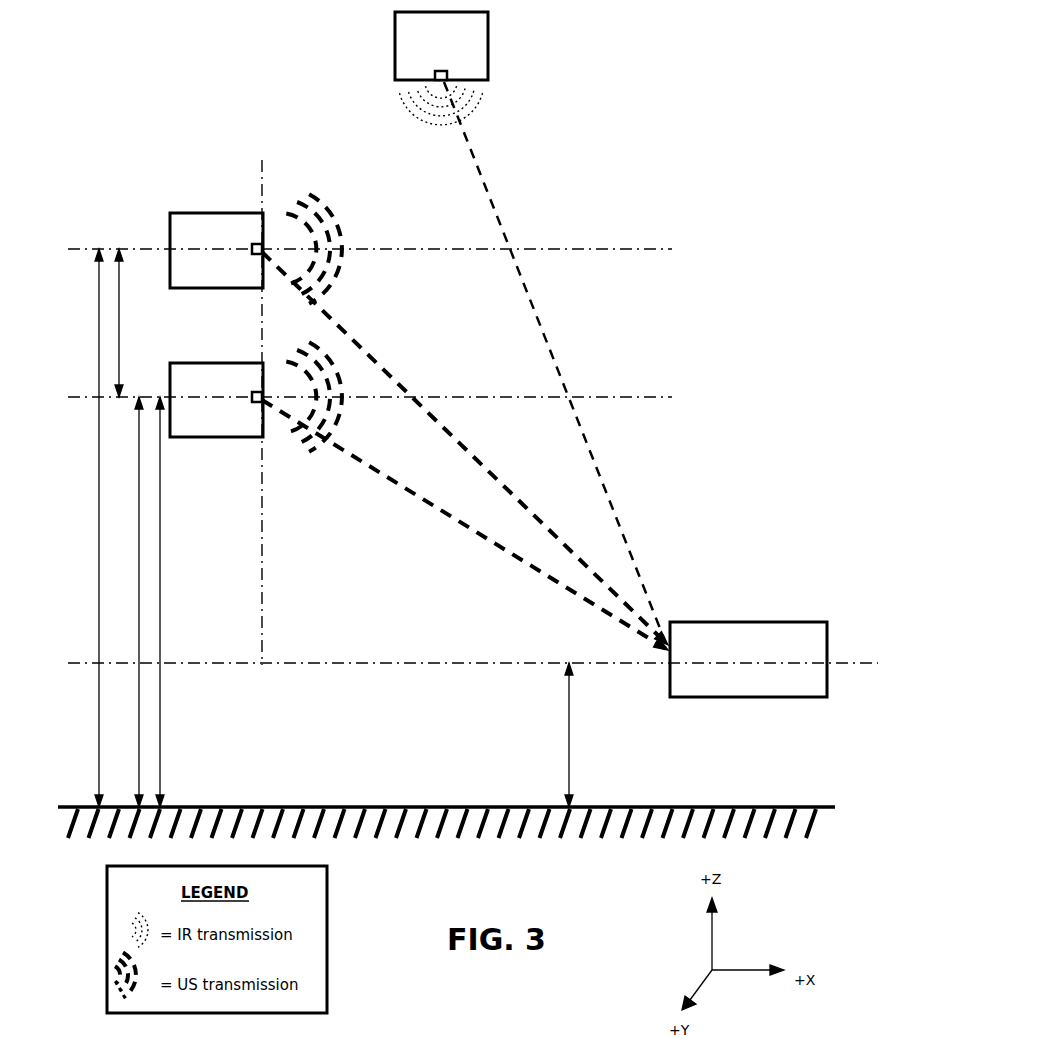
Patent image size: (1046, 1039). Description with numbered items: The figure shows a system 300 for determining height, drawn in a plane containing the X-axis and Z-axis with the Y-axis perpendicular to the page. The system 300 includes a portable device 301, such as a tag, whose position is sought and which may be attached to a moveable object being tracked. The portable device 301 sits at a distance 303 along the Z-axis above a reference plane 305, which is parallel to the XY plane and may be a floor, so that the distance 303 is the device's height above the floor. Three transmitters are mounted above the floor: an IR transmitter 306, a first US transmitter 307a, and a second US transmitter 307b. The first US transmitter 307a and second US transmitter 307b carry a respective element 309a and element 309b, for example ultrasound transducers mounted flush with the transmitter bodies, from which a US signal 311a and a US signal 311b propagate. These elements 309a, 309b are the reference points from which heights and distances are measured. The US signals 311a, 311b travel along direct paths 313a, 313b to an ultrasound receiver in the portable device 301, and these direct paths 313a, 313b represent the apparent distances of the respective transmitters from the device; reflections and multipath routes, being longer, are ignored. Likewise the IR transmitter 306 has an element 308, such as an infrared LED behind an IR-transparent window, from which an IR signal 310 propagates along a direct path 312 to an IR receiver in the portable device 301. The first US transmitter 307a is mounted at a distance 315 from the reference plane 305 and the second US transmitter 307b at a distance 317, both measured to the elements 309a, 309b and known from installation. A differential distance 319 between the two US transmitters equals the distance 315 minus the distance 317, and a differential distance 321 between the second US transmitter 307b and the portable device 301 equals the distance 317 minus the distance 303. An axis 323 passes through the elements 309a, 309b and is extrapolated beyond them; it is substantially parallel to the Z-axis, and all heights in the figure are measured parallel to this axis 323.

The system 300 is at (512, 988).
The portable device 301 is at (767, 684).
The distance 303 is at (570, 760).
The reference plane 305 is at (795, 807).
The IR transmitter 306 is at (467, 41).
The first US transmitter 307a is at (251, 276).
The second US transmitter 307b is at (251, 425).
The element 308 is at (447, 76).
The element 309a is at (261, 247).
The element 309b is at (261, 395).
The IR signal 310 is at (478, 112).
The US signal 311a is at (345, 218).
The US signal 311b is at (320, 440).
The direct path 312 is at (483, 183).
The direct path 313a is at (358, 326).
The direct path 313b is at (393, 455).
The distance 315 is at (99, 522).
The distance 317 is at (160, 612).
The differential distance 319 is at (120, 352).
The differential distance 321 is at (139, 562).
The axis 323 is at (262, 612).